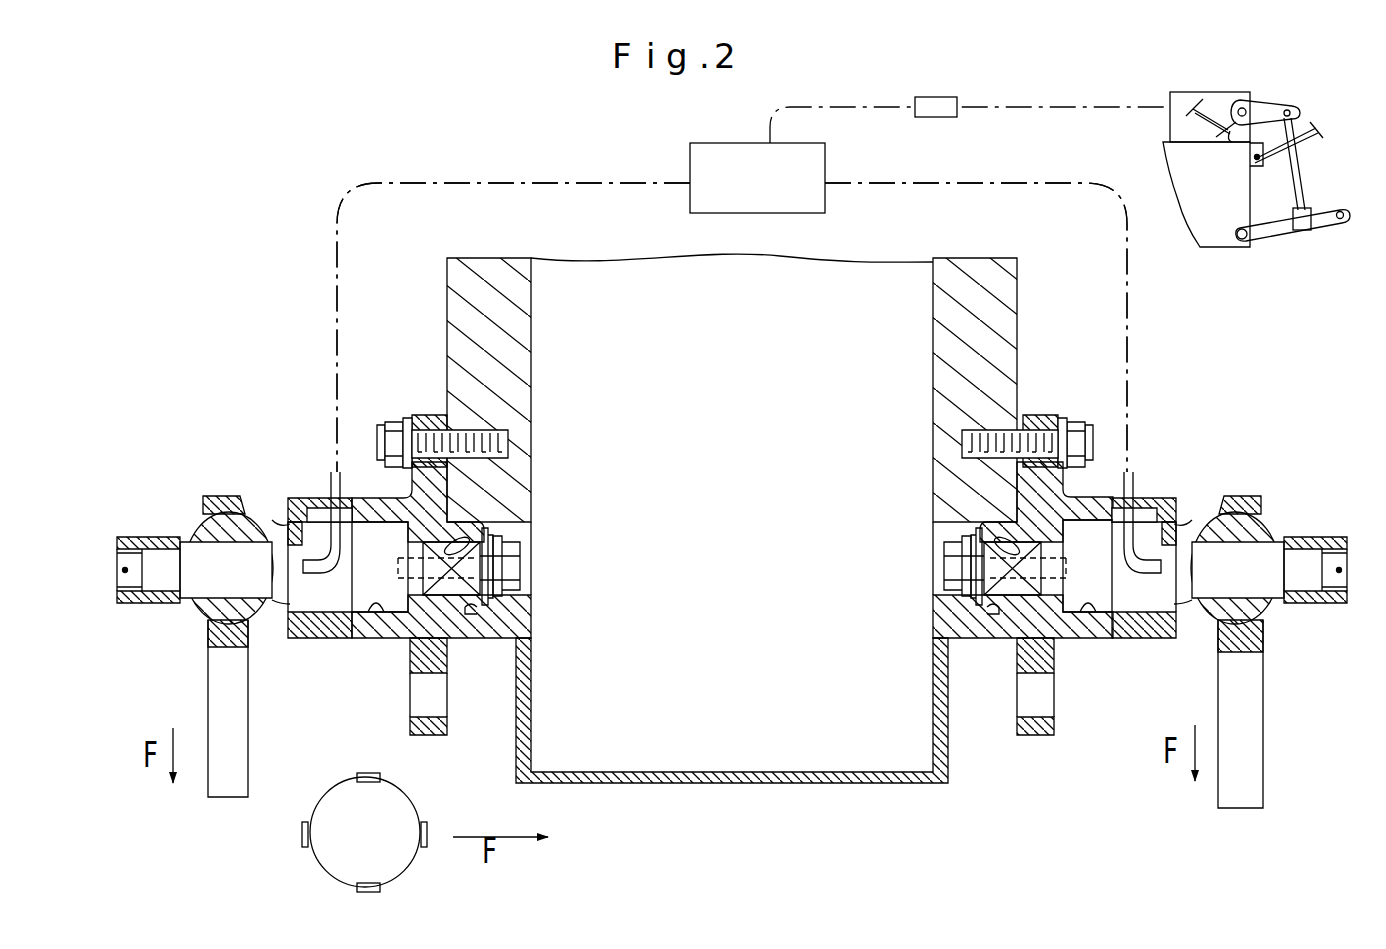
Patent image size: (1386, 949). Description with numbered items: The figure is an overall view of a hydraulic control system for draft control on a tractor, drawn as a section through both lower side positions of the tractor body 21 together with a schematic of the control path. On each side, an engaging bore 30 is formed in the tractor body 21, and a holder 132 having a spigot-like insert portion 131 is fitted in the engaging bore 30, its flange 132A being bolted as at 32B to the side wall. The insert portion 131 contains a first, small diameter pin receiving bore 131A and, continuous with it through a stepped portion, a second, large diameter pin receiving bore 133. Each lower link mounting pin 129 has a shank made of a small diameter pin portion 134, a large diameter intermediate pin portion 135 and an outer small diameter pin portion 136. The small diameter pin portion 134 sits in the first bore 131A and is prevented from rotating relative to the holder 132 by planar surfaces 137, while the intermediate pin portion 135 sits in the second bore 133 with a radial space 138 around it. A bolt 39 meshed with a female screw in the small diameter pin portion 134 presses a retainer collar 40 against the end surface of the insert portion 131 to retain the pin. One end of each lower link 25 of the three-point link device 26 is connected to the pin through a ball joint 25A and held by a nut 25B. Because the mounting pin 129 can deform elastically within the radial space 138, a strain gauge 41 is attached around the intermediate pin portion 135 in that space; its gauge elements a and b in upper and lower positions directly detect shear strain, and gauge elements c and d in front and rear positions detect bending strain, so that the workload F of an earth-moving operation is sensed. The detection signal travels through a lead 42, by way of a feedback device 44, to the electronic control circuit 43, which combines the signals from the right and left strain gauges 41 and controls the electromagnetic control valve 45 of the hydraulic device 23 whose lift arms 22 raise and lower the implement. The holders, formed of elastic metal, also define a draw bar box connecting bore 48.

The tractor body 21 is at (1000, 333).
The lift arms 22 is at (1262, 115).
The hydraulic device 23 is at (1170, 100).
The lower links 25 is at (222, 752).
The ball joint 25A is at (196, 527).
The nut 25B is at (130, 545).
The three-point link device 26 is at (1289, 247).
The engaging bore 30 is at (523, 535).
The bolt 32B is at (533, 422).
The bolt 39 is at (513, 568).
The retainer collar 40 is at (490, 582).
The strain gauge 41 is at (333, 488).
The lead 42 is at (337, 322).
The electronic control circuit 43 is at (760, 213).
The feedback device 44 is at (333, 240).
The electromagnetic control valve 45 is at (950, 113).
The draw bar box connecting bore 48 is at (445, 705).
The lower link mounting pin 129 is at (164, 570).
The insert portion 131 is at (483, 613).
The first pin receiving bore 131A is at (465, 518).
The holder 132 is at (292, 494).
The flange 132A is at (420, 412).
The second pin receiving bore 133 is at (383, 607).
The small diameter pin portion 134 is at (483, 595).
The intermediate pin portion 135 is at (368, 538).
The small diameter pin portion 136 is at (247, 578).
The planar surfaces 137 is at (462, 545).
The radial space 138 is at (290, 522).
The gauge element a is at (368, 775).
The gauge element b is at (375, 893).
The gauge element c is at (420, 820).
The gauge element d is at (305, 822).